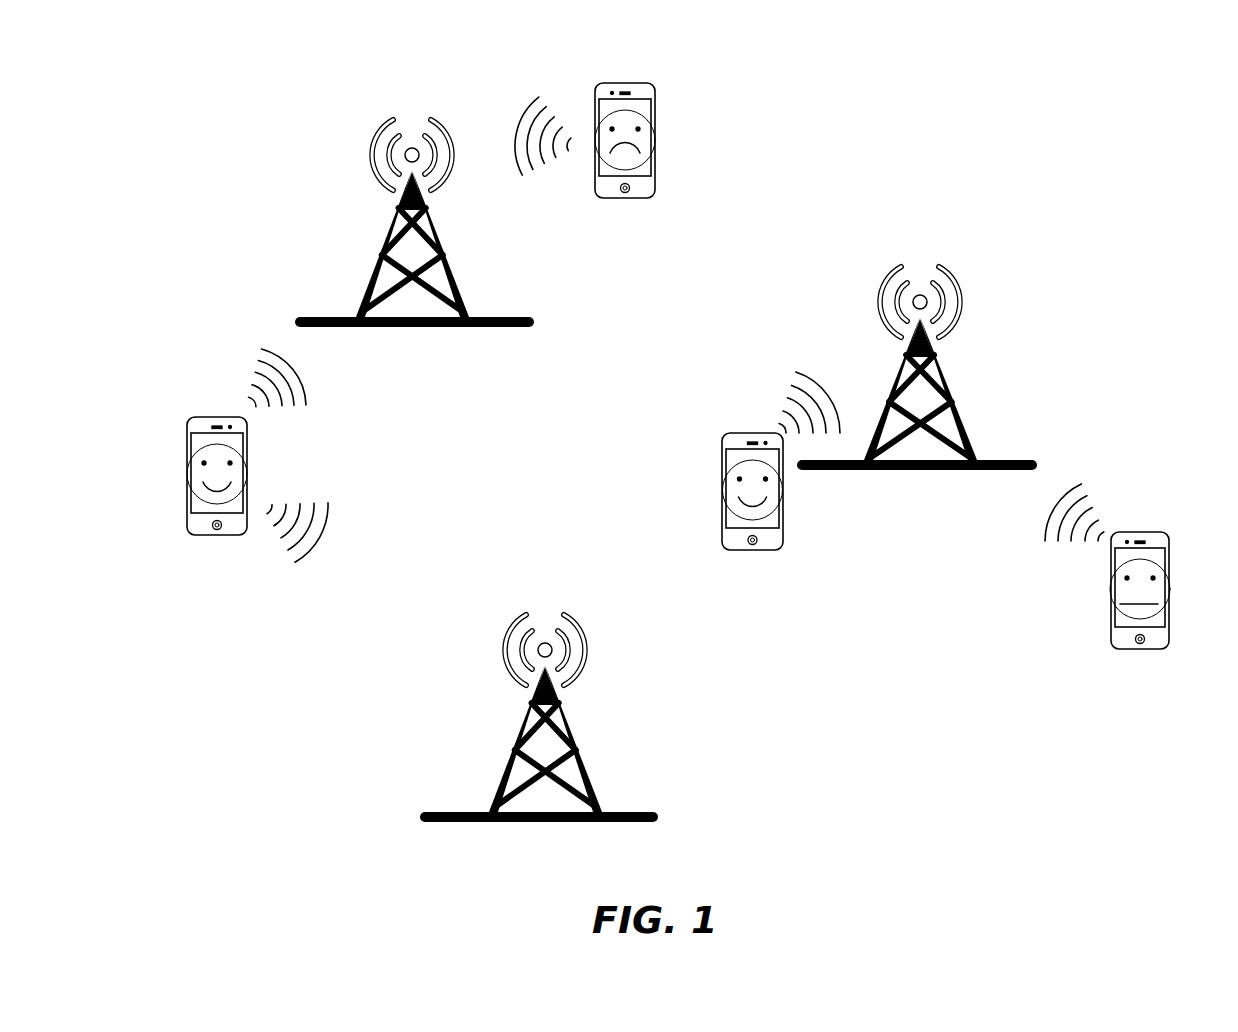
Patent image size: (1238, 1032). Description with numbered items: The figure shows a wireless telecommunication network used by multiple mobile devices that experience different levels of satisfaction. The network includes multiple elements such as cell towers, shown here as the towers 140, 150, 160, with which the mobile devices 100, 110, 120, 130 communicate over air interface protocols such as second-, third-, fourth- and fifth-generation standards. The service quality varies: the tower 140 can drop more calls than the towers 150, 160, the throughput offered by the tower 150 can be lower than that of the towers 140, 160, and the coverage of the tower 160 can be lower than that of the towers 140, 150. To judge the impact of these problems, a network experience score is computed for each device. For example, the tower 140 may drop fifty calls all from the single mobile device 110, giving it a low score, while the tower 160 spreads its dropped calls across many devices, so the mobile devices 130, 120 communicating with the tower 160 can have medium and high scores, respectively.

The mobile device 100 is at (188, 530).
The mobile device 110 is at (632, 86).
The mobile device 120 is at (1138, 532).
The mobile device 130 is at (740, 550).
The tower 140 is at (357, 308).
The tower 150 is at (508, 764).
The tower 160 is at (953, 404).